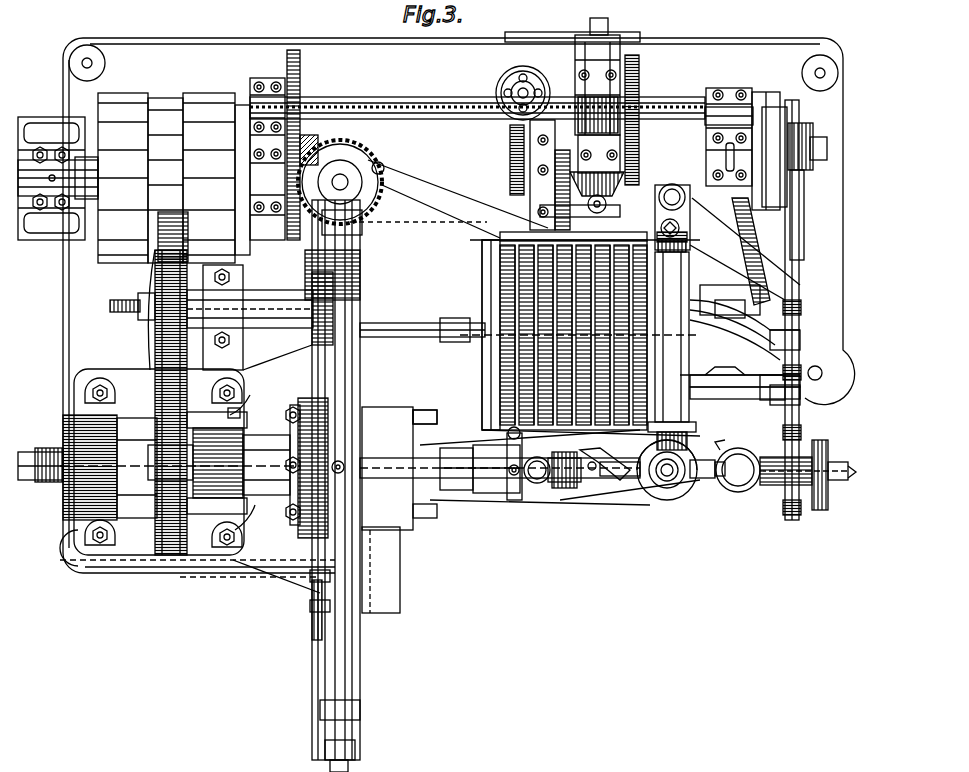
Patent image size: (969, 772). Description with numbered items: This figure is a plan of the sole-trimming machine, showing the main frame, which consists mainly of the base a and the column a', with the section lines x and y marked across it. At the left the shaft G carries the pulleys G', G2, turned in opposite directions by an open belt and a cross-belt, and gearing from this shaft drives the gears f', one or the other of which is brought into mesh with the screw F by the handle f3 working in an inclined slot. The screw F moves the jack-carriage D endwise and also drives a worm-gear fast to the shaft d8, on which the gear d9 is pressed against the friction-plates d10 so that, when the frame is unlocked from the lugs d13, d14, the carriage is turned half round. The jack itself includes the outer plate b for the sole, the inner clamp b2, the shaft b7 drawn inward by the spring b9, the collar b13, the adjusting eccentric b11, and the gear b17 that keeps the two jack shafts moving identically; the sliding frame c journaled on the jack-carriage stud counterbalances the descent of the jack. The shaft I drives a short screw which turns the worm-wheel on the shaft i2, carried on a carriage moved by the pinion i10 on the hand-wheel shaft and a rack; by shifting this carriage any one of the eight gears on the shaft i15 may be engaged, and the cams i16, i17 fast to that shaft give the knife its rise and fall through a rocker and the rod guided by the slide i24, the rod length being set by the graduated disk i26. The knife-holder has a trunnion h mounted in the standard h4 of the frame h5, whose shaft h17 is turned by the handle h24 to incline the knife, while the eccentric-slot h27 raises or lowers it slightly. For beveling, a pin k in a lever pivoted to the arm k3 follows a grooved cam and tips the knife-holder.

The base a is at (457, 305).
The column a' is at (197, 464).
The pulley G' is at (103, 178).
The pulley G2 is at (216, 178).
The handle f3 is at (330, 160).
The gears f' is at (449, 190).
The shaft I is at (466, 120).
The pinion i10 is at (500, 100).
The shaft i2 is at (600, 38).
The section line x is at (596, 430).
The shaft i15 is at (445, 322).
The pin k is at (692, 330).
The arm k3 is at (740, 298).
The frame h5 is at (672, 342).
The standard h4 is at (686, 256).
The trunnion h is at (688, 436).
The shaft h17 is at (680, 500).
The eccentric-slot h27 is at (735, 450).
The gear b17 is at (820, 440).
The section line y is at (430, 466).
The cam i17 is at (802, 252).
The slide i24 is at (792, 330).
The graduated disk i26 is at (722, 380).
The cam i16 is at (775, 395).
The outer plate b is at (575, 490).
The spring b9 is at (513, 500).
The shaft b7 is at (536, 485).
The eccentric b11 is at (565, 490).
The handle h24 is at (594, 482).
The collar b13 is at (498, 500).
The jack-carriage D is at (275, 516).
The inner clamp b2 is at (170, 556).
The gear d9 is at (192, 350).
The shaft d8 is at (260, 317).
The friction-plates d10 is at (160, 285).
The lug d14 is at (252, 396).
The lug d13 is at (243, 540).
The screw F is at (365, 486).
The sliding frame c is at (384, 600).